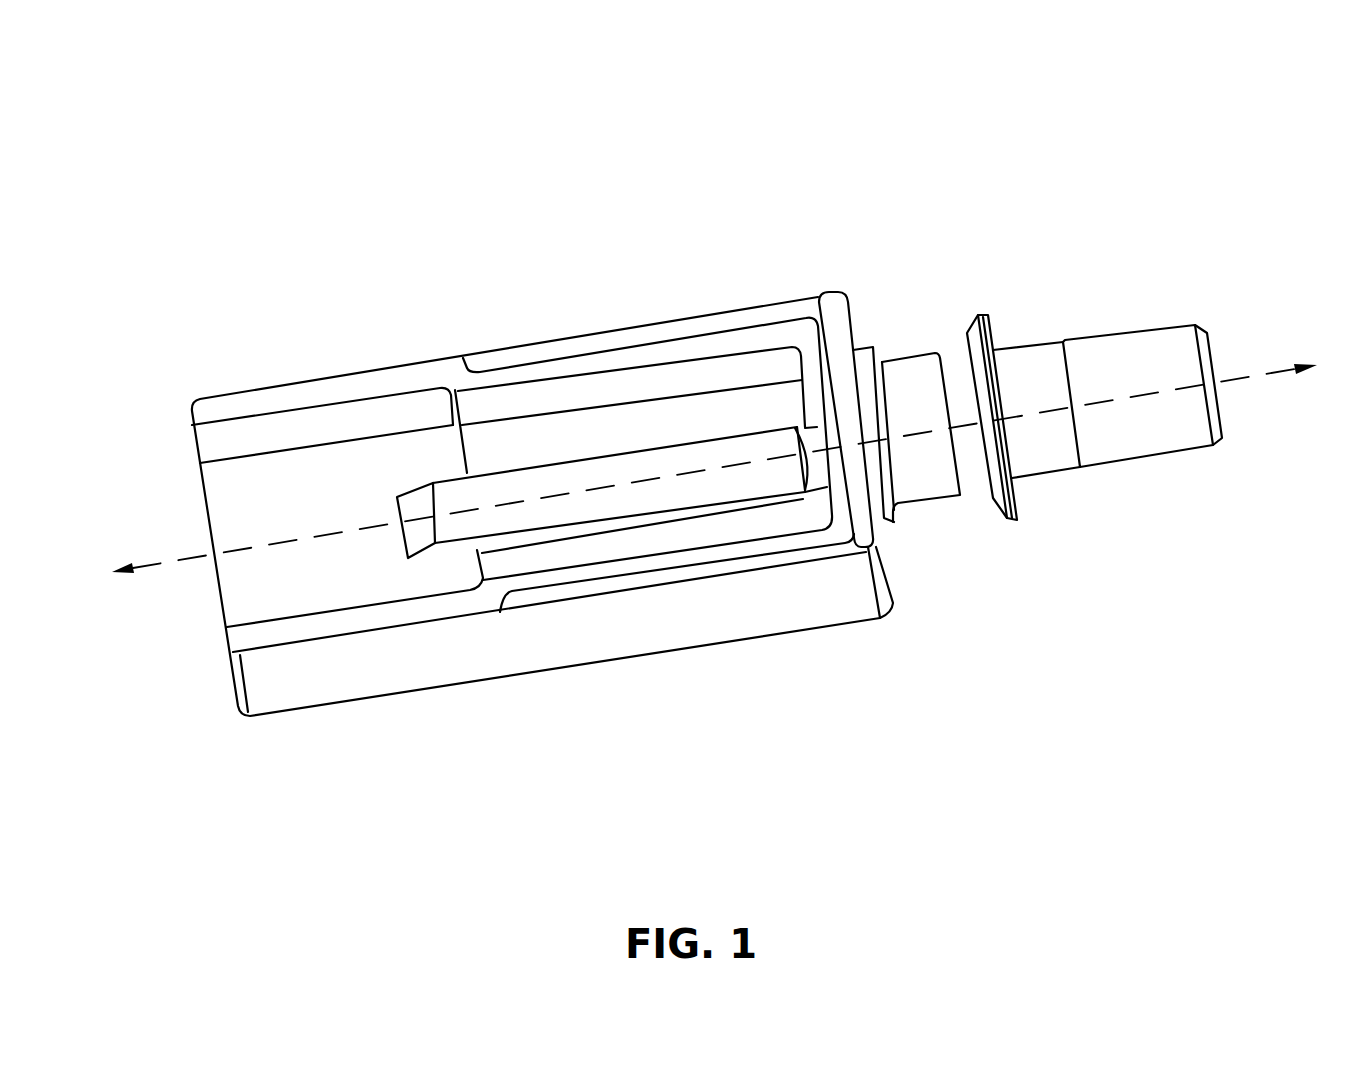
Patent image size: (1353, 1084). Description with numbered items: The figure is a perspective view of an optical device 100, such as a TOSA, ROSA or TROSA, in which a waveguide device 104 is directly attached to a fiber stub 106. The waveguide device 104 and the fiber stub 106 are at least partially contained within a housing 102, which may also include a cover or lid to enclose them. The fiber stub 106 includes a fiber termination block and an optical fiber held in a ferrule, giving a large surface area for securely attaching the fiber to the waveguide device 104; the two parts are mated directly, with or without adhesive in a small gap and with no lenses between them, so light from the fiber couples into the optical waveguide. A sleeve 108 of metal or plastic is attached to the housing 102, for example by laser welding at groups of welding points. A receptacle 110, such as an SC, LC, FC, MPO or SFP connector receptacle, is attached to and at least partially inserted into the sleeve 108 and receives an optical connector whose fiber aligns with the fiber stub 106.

The optical device 100 is at (172, 63).
The housing 102 is at (273, 397).
The waveguide device 104 is at (502, 478).
The fiber stub 106 is at (803, 426).
The sleeve 108 is at (903, 366).
The receptacle 110 is at (1137, 351).